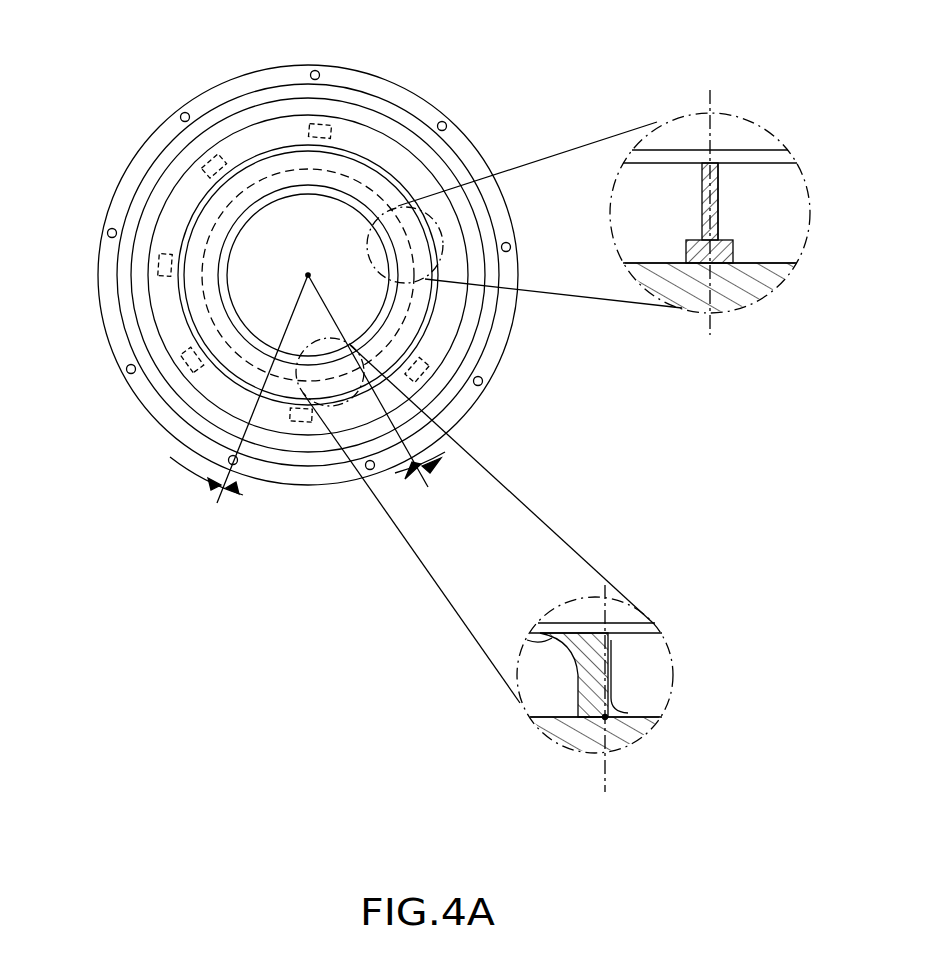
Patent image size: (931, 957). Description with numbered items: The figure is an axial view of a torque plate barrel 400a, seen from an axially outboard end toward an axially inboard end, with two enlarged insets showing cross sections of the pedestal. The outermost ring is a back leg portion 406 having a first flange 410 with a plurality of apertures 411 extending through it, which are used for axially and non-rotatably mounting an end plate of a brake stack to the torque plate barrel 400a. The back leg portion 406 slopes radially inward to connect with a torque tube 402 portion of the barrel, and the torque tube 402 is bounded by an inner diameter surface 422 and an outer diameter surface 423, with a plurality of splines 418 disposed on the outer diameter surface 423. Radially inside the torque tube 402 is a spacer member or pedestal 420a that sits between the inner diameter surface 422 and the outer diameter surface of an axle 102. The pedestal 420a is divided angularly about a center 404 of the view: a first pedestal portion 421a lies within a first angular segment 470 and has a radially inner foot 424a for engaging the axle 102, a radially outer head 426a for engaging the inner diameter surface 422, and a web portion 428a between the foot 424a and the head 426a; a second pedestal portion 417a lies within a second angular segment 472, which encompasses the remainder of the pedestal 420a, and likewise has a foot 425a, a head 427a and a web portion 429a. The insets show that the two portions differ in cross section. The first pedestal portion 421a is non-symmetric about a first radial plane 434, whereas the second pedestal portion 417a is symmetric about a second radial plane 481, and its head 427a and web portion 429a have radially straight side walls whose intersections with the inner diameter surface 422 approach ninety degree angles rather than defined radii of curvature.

The torque plate barrel 400a is at (116, 110).
The torque tube 402 is at (227, 378).
The central axis 404 is at (309, 274).
The back leg portion 406 is at (478, 138).
The first flange 410 is at (442, 420).
The apertures 411 is at (483, 386).
The second pedestal portion 417a is at (230, 350).
The splines 418 is at (165, 266).
The pedestal 420a is at (357, 168).
The first pedestal portion 421a is at (300, 343).
The inner diameter surface 422 is at (185, 299).
The outer diameter surface 423 is at (205, 320).
The foot 424a is at (287, 345).
The foot 425a is at (232, 232).
The head 426a is at (289, 388).
The head 427a is at (243, 180).
The web portion 428a is at (358, 345).
The web portion 429a is at (347, 183).
The first radial plane 434 is at (608, 614).
The first angular segment 470 is at (388, 488).
The second angular segment 472 is at (186, 463).
The second radial plane 481 is at (712, 133).
The axle 102 is at (670, 290).